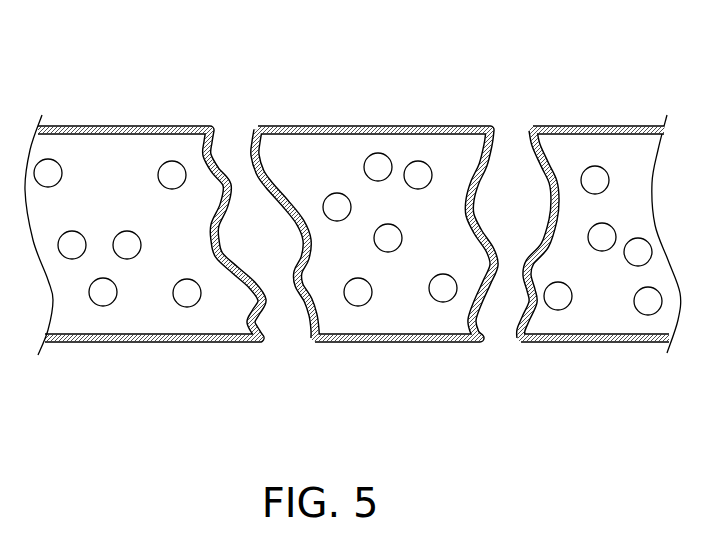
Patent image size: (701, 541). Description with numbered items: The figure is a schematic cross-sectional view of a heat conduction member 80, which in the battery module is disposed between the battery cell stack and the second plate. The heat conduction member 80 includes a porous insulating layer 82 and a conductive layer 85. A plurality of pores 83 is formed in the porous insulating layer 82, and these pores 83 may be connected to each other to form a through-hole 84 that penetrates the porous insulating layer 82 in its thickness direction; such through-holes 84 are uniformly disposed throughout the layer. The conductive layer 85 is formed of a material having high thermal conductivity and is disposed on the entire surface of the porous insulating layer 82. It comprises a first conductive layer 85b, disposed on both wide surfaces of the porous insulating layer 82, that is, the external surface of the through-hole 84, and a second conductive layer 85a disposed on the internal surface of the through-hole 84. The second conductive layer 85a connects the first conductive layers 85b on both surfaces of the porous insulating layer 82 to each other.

The heat conduction member 80 is at (344, 43).
The porous insulating layer 82 is at (393, 312).
The pores 83 is at (447, 293).
The through-hole 84 is at (527, 210).
The conductive layer 85 is at (176, 292).
The second conductive layer 85a is at (285, 271).
The first conductive layer 85b is at (192, 343).